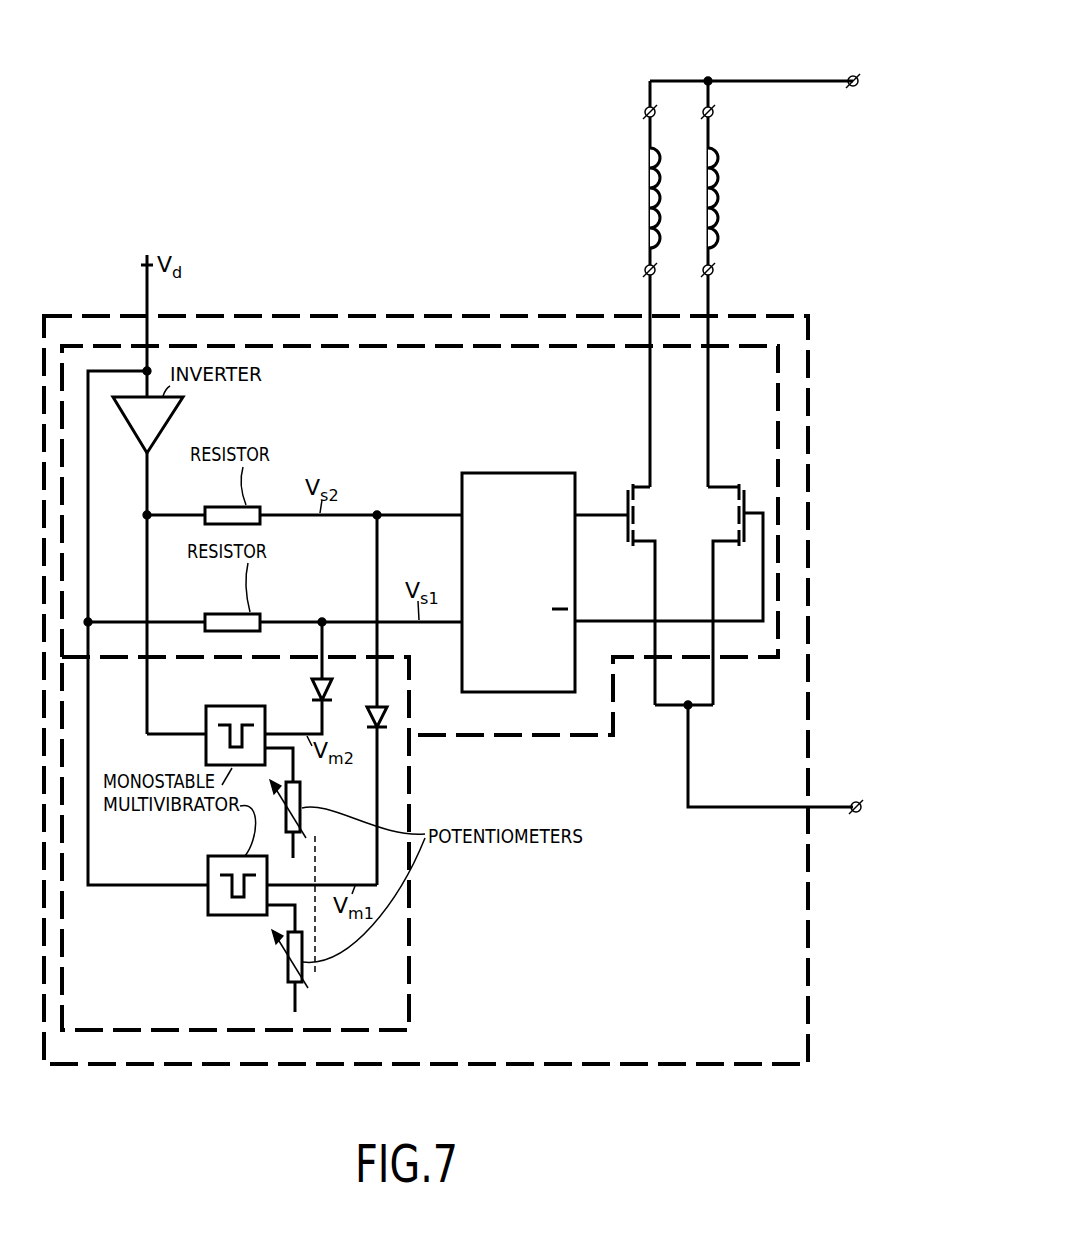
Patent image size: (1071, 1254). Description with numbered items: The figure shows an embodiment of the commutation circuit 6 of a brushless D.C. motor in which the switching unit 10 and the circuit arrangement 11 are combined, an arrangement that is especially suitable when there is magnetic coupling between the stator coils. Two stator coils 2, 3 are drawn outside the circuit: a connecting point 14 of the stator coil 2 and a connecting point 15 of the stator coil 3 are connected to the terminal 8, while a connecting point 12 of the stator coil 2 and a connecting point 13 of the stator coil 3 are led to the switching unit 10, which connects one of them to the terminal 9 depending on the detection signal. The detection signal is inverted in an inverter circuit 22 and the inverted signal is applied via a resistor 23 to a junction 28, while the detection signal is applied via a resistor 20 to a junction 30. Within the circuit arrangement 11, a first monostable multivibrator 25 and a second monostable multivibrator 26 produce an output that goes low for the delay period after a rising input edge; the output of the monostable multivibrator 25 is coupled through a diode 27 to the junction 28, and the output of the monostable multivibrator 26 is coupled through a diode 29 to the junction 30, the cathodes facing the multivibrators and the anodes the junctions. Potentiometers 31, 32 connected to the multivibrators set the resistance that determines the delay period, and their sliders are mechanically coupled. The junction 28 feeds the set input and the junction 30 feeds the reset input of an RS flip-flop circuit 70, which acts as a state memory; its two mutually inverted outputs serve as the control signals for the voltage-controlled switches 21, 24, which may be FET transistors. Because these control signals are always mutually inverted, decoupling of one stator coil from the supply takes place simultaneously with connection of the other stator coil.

The stator coil 2 is at (643, 172).
The stator coil 3 is at (724, 172).
The commutation circuit 6 is at (272, 314).
The terminal 8 is at (852, 63).
The terminal 9 is at (856, 790).
The switching unit 10 is at (358, 345).
The circuit arrangement 11 is at (413, 893).
The connecting point 12 is at (645, 271).
The connecting point 13 is at (716, 271).
The connecting point 14 is at (645, 113).
The connecting point 15 is at (716, 113).
The resistor 20 is at (222, 613).
The voltage-controlled switch 21 is at (735, 486).
The inverter circuit 22 is at (176, 413).
The resistor 23 is at (216, 507).
The voltage-controlled switch 24 is at (641, 486).
The first monostable multivibrator 25 is at (226, 856).
The second monostable multivibrator 26 is at (221, 705).
The diode 27 is at (368, 707).
The junction 28 is at (377, 511).
The diode 29 is at (311, 685).
The junction 30 is at (321, 618).
The potentiometer 31 is at (302, 793).
The potentiometer 32 is at (303, 944).
The RS flip-flop circuit 70 is at (512, 487).